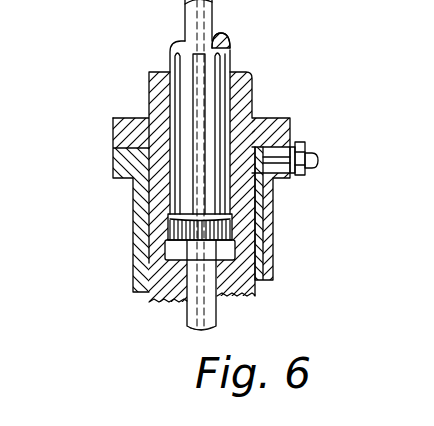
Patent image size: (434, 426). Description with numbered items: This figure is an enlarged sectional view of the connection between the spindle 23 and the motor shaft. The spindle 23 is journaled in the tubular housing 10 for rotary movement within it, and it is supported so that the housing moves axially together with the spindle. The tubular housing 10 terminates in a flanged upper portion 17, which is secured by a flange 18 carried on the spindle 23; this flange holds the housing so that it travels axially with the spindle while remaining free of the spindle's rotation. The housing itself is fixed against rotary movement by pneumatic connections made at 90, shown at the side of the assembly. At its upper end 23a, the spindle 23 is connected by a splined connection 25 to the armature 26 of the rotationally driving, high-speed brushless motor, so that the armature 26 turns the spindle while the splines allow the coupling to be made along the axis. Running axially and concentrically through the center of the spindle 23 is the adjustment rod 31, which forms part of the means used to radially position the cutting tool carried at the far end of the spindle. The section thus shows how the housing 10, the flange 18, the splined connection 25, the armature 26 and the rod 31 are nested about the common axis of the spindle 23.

The tubular housing 10 is at (133, 267).
The flanged upper portion 17 is at (125, 160).
The flange 18 is at (113, 128).
The spindle 23 is at (150, 303).
The upper end of spindle 23a is at (256, 116).
The splined connection 25 is at (217, 103).
The armature 26 is at (198, 50).
The adjustment rod 31 is at (217, 313).
The pneumatic connections 90 is at (302, 145).